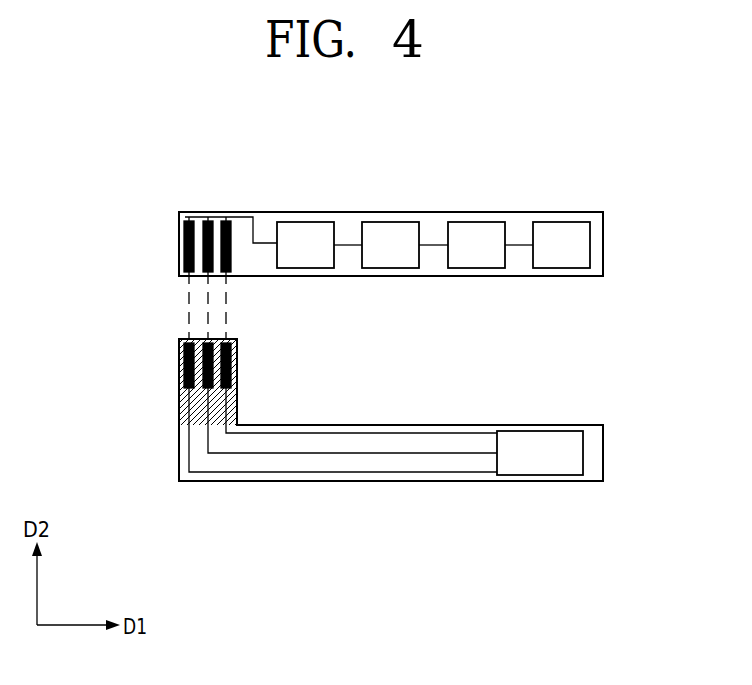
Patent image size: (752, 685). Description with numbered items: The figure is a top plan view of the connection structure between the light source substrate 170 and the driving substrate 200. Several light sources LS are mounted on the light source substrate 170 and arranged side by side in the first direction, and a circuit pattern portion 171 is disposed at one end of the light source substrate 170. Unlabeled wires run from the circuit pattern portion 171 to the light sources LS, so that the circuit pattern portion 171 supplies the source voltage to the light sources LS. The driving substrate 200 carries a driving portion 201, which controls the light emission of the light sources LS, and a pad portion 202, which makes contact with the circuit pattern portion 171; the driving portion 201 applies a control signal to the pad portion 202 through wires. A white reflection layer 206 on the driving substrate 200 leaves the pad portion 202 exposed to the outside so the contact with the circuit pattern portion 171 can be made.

The light source substrate 170 is at (603, 244).
The light sources LS is at (562, 228).
The circuit pattern portion 171 is at (181, 243).
The driving substrate 200 is at (603, 450).
The driving portion 201 is at (540, 470).
The pad portion 202 is at (181, 363).
The reflection layer 206 is at (200, 405).